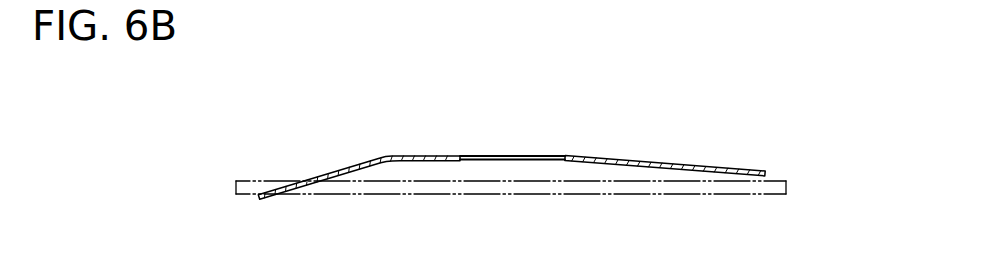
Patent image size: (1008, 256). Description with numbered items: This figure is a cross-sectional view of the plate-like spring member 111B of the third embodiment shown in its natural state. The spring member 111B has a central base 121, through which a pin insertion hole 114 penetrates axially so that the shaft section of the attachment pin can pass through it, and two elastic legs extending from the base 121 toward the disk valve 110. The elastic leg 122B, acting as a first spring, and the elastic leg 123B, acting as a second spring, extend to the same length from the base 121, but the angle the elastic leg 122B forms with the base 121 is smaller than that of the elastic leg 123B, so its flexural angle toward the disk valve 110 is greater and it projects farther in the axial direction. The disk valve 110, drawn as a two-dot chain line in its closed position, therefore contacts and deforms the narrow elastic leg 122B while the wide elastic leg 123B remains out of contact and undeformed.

The disk valve 110 is at (776, 176).
The spring member 111B is at (753, 152).
The pin insertion hole 114 is at (461, 158).
The base 121 is at (593, 156).
The elastic leg (first spring) 122B is at (325, 173).
The elastic leg (second spring) 123B is at (712, 165).